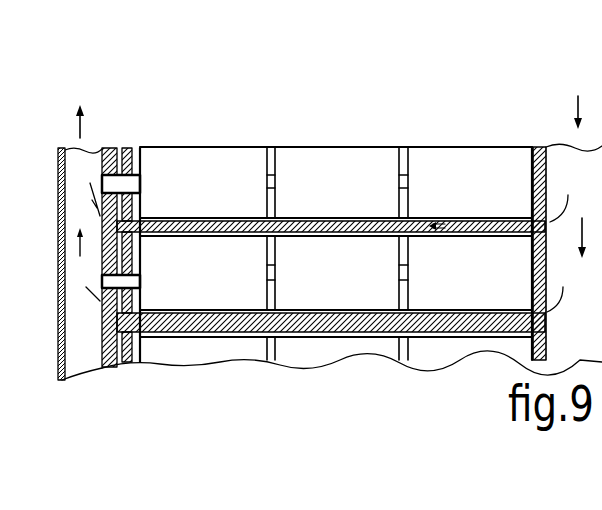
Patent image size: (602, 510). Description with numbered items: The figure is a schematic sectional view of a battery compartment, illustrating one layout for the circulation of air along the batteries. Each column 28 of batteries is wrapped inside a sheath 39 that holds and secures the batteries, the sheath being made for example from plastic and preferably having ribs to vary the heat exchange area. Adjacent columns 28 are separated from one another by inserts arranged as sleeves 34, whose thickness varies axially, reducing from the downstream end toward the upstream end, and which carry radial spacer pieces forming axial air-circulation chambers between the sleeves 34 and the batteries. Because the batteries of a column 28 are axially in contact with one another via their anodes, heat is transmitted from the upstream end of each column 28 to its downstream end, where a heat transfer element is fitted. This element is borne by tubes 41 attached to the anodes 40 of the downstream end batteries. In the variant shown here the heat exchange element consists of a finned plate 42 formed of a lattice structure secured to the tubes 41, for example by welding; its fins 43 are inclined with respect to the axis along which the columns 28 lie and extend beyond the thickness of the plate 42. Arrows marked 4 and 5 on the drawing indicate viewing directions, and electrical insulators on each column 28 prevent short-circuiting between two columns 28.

The view direction arrow for FIG. 4 is at (78, 110).
The view direction arrow for FIG. 5 is at (577, 99).
The column of batteries 28 is at (208, 198).
The sleeve 34 is at (313, 333).
The sheath 39 is at (401, 144).
The anode 40 is at (141, 258).
The tube 41 is at (102, 282).
The finned plate 42 is at (101, 149).
The fin 43 is at (62, 172).